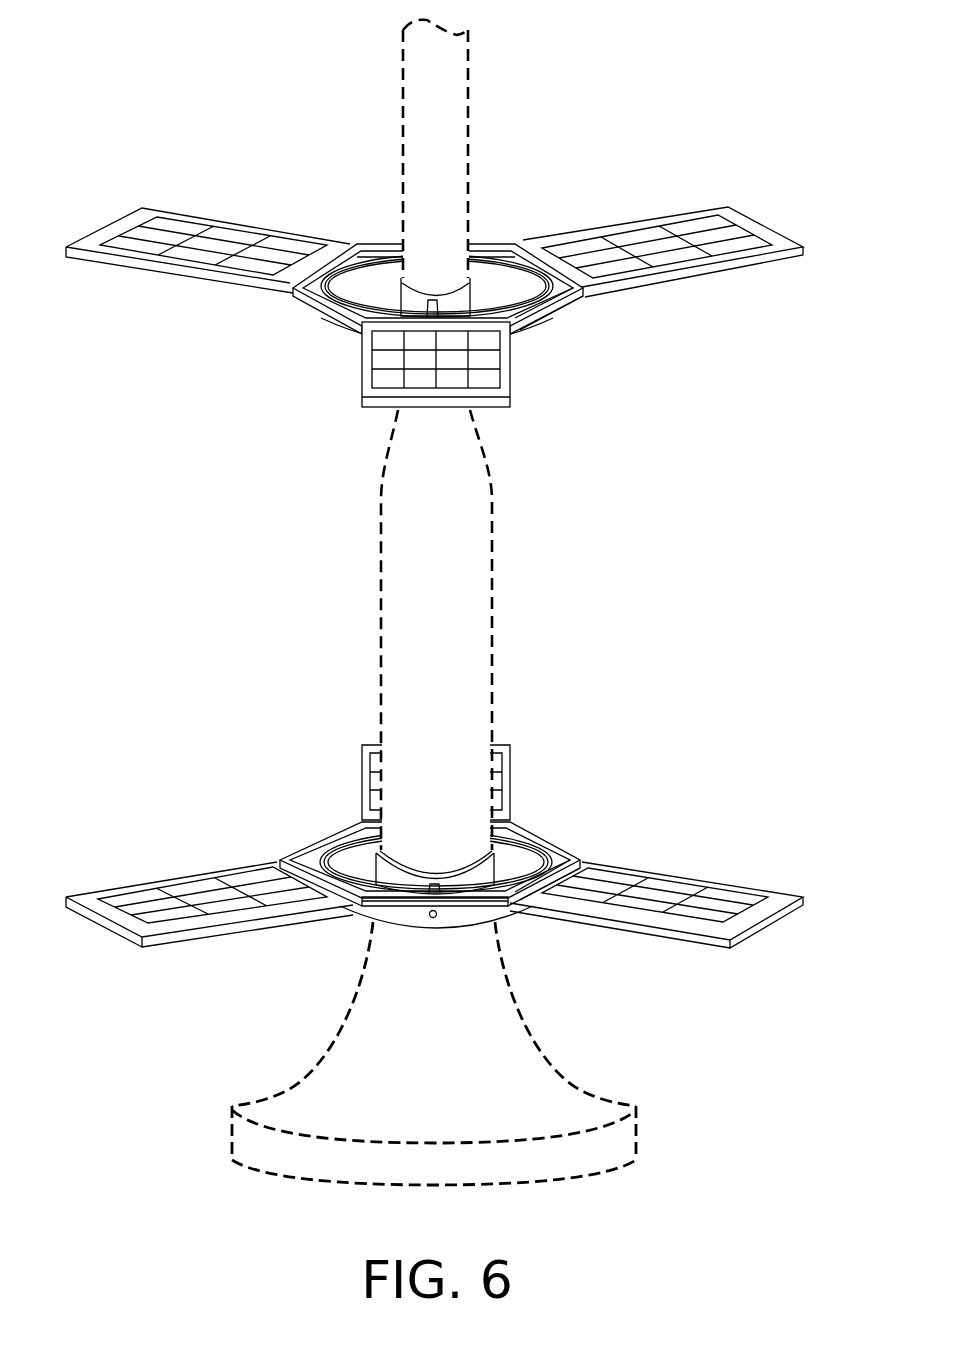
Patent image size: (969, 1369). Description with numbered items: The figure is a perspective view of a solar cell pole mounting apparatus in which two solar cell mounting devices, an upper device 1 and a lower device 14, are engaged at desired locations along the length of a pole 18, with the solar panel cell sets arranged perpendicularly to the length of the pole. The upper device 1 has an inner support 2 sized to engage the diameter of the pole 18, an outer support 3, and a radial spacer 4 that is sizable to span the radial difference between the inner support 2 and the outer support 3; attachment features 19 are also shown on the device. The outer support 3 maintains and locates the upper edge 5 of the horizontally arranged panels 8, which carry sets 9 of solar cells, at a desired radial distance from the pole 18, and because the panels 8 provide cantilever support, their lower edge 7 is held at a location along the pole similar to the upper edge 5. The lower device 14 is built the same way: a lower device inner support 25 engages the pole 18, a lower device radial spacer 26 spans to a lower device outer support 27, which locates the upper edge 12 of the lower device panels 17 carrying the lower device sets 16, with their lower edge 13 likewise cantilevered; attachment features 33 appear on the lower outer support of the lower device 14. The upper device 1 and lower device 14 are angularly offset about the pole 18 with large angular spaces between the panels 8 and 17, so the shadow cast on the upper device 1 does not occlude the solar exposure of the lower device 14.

The device 1 is at (747, 110).
The inner support 2 is at (472, 278).
The outer support 3 is at (537, 278).
The radial spacer 4 is at (365, 296).
The upper edge 5 is at (575, 266).
The lower edge 7 is at (803, 252).
The panels 8 is at (260, 287).
The sets 9 is at (363, 363).
The attachment features 19 is at (575, 270).
The upper edge of lower device panels 12 is at (582, 860).
The lower edge of lower device panels 13 is at (788, 898).
The lower device 14 is at (155, 1045).
The sets of lower device 16 is at (252, 887).
The panels of lower device 17 is at (88, 892).
The multiple diameter pole 18 is at (555, 1092).
The lower device inner support 25 is at (512, 850).
The lower device radial spacer 26 is at (352, 872).
The lower device outer support 27 is at (543, 850).
The attachment features of lower outer support of lower device 33 is at (431, 917).